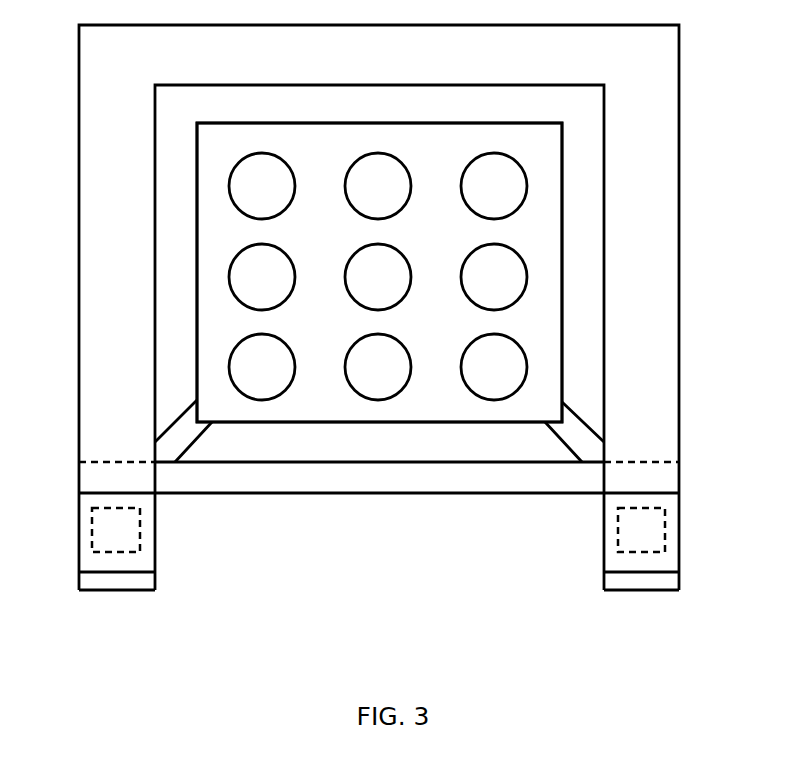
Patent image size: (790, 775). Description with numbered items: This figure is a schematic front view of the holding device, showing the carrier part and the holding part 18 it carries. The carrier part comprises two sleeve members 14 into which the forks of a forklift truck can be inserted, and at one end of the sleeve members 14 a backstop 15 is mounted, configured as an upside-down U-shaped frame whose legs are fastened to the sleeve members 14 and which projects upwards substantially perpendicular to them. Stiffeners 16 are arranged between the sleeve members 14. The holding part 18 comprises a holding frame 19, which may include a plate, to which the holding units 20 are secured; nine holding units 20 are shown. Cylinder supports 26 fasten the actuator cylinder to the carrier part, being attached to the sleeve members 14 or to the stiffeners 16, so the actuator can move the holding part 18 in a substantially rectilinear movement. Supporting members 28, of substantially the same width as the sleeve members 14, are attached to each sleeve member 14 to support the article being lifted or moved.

The sleeve members 14 is at (78, 530).
The backstop 15 is at (680, 60).
The stiffeners 16 is at (438, 493).
The holding part 18 is at (318, 428).
The holding frame 19 is at (542, 308).
The holding units 20 is at (493, 399).
The cylinder supports 26 is at (167, 430).
The supporting members 28 is at (117, 591).